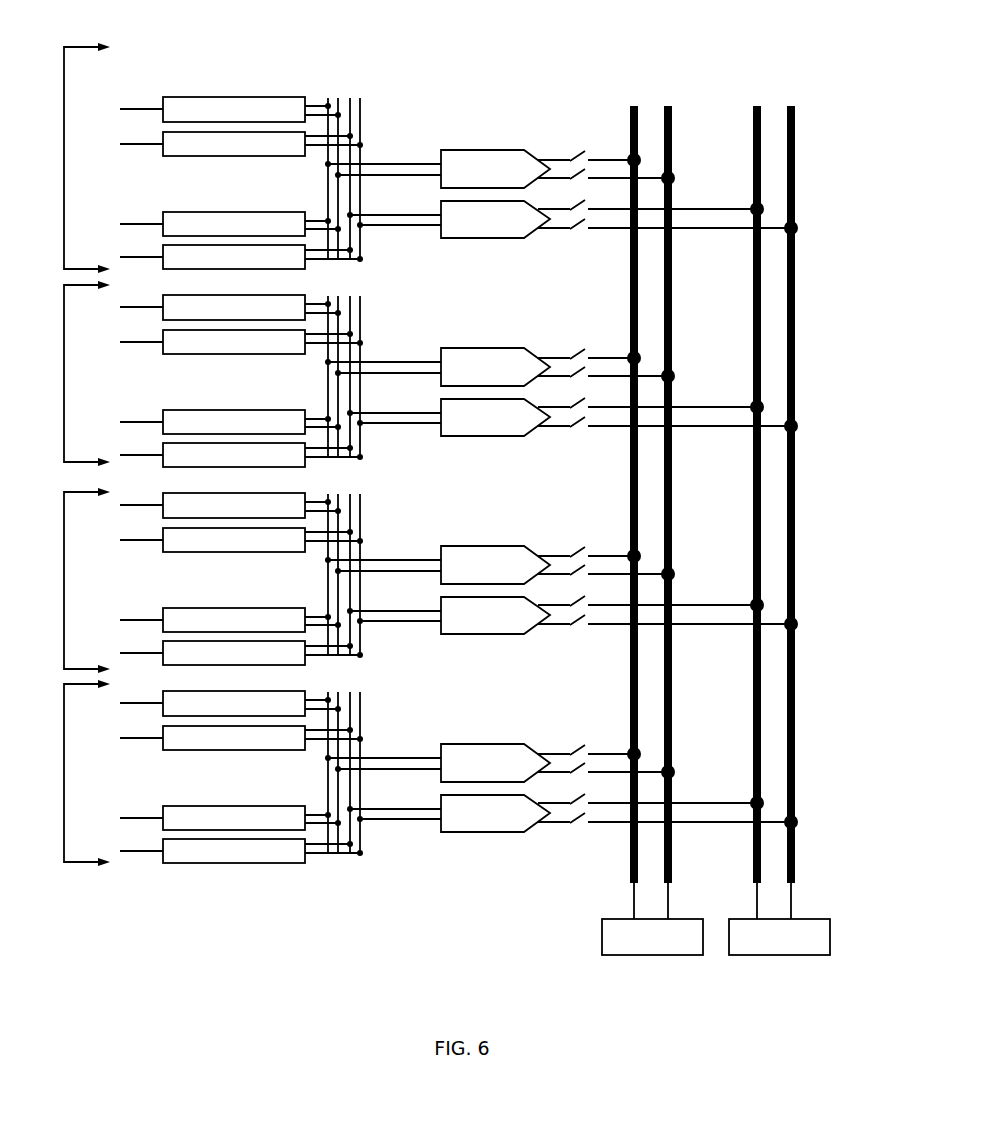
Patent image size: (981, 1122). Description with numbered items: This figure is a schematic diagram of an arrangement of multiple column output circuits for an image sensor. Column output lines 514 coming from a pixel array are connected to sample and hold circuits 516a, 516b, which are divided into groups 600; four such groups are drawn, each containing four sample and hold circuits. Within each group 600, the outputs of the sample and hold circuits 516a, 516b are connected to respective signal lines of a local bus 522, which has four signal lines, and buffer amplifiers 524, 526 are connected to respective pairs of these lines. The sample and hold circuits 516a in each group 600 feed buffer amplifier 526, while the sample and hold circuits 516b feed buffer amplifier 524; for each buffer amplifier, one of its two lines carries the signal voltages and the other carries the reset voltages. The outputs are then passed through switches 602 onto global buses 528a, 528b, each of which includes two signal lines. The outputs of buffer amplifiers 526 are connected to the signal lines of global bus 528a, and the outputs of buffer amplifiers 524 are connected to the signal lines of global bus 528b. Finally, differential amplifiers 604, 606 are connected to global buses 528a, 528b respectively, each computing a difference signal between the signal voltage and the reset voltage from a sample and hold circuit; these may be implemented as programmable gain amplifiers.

The group 600 is at (65, 454).
The column output line 514 is at (138, 106).
The sample and hold circuit 516a is at (228, 104).
The sample and hold circuit 516b is at (241, 150).
The local bus 522 is at (329, 866).
The buffer amplifier 524 is at (616, 516).
The buffer amplifier 526 is at (554, 466).
The switch 602 is at (586, 840).
The global bus 528a is at (671, 97).
The global bus 528b is at (757, 97).
The differential amplifier 604 is at (652, 937).
The differential amplifier 606 is at (779, 937).